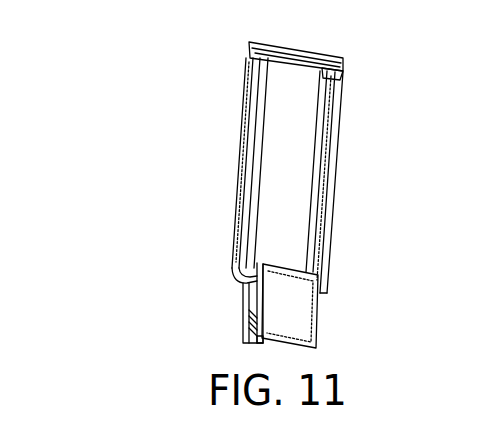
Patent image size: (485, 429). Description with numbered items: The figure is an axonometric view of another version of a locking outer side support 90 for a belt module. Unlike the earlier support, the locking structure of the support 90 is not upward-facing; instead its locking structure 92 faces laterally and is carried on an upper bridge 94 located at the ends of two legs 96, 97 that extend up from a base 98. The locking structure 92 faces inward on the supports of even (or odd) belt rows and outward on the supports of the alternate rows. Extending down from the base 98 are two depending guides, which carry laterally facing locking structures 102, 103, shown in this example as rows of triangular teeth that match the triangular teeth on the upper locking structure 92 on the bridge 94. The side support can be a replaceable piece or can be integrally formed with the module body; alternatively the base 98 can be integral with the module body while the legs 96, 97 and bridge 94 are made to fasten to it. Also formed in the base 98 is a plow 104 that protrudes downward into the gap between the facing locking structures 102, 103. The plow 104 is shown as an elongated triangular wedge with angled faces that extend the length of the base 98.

The support 90 is at (184, 82).
The locking structure 92 is at (248, 50).
The upper bridge 94 is at (338, 68).
The leg 96 is at (242, 175).
The leg 97 is at (334, 222).
The base 98 is at (313, 312).
The locking structure 102 is at (257, 337).
The locking structure 103 is at (262, 340).
The plow 104 is at (260, 307).